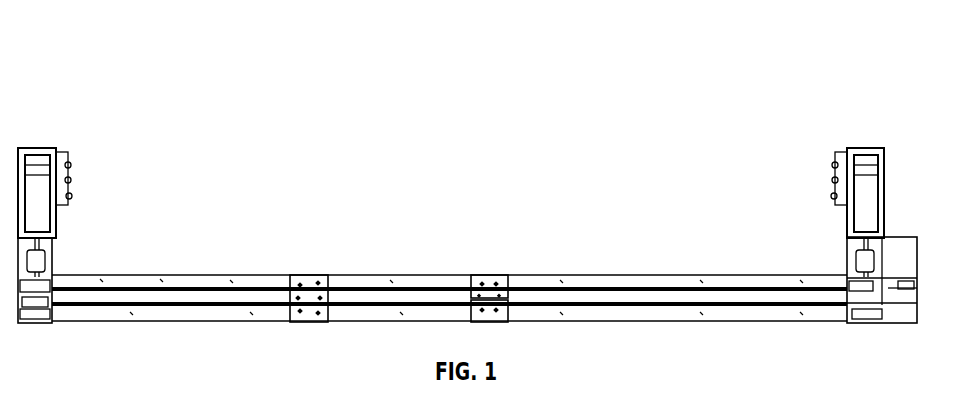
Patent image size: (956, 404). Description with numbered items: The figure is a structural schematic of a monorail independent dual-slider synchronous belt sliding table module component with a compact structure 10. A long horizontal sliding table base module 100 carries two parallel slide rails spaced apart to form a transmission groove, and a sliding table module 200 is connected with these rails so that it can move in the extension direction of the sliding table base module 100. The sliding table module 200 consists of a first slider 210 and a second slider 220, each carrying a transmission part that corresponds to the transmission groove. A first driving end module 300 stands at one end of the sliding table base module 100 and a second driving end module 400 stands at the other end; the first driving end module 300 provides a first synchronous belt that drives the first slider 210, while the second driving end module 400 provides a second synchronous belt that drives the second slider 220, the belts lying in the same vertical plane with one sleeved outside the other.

The monorail independent dual-slider synchronous belt sliding table module component 10 is at (483, 66).
The sliding table base module 100 is at (152, 276).
The sliding table module 200 is at (580, 211).
The first slider 210 is at (305, 276).
The second slider 220 is at (483, 276).
The first driving end module 300 is at (62, 150).
The second driving end module 400 is at (865, 147).